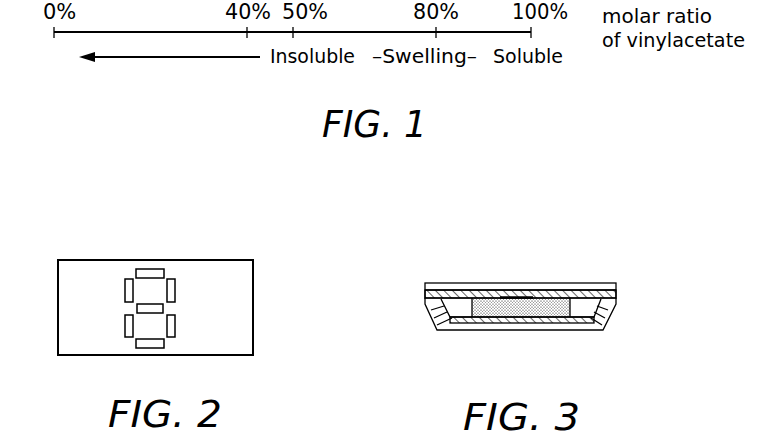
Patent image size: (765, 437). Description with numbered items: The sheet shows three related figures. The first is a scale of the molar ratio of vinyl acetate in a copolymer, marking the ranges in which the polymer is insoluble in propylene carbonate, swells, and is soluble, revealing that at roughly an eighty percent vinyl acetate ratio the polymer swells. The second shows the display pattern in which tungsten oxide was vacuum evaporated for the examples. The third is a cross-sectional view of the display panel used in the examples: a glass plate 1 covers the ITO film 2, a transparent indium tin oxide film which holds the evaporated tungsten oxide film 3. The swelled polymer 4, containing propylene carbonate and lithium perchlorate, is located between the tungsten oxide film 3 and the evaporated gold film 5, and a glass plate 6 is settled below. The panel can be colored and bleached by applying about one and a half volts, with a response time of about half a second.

The glass plate 1 is at (570, 283).
The ITO film 2 is at (456, 291).
The tungsten oxide film 3 is at (510, 296).
The swelled polymer 4 is at (561, 310).
The evaporated gold film 5 is at (514, 323).
The glass plate 6 is at (465, 330).